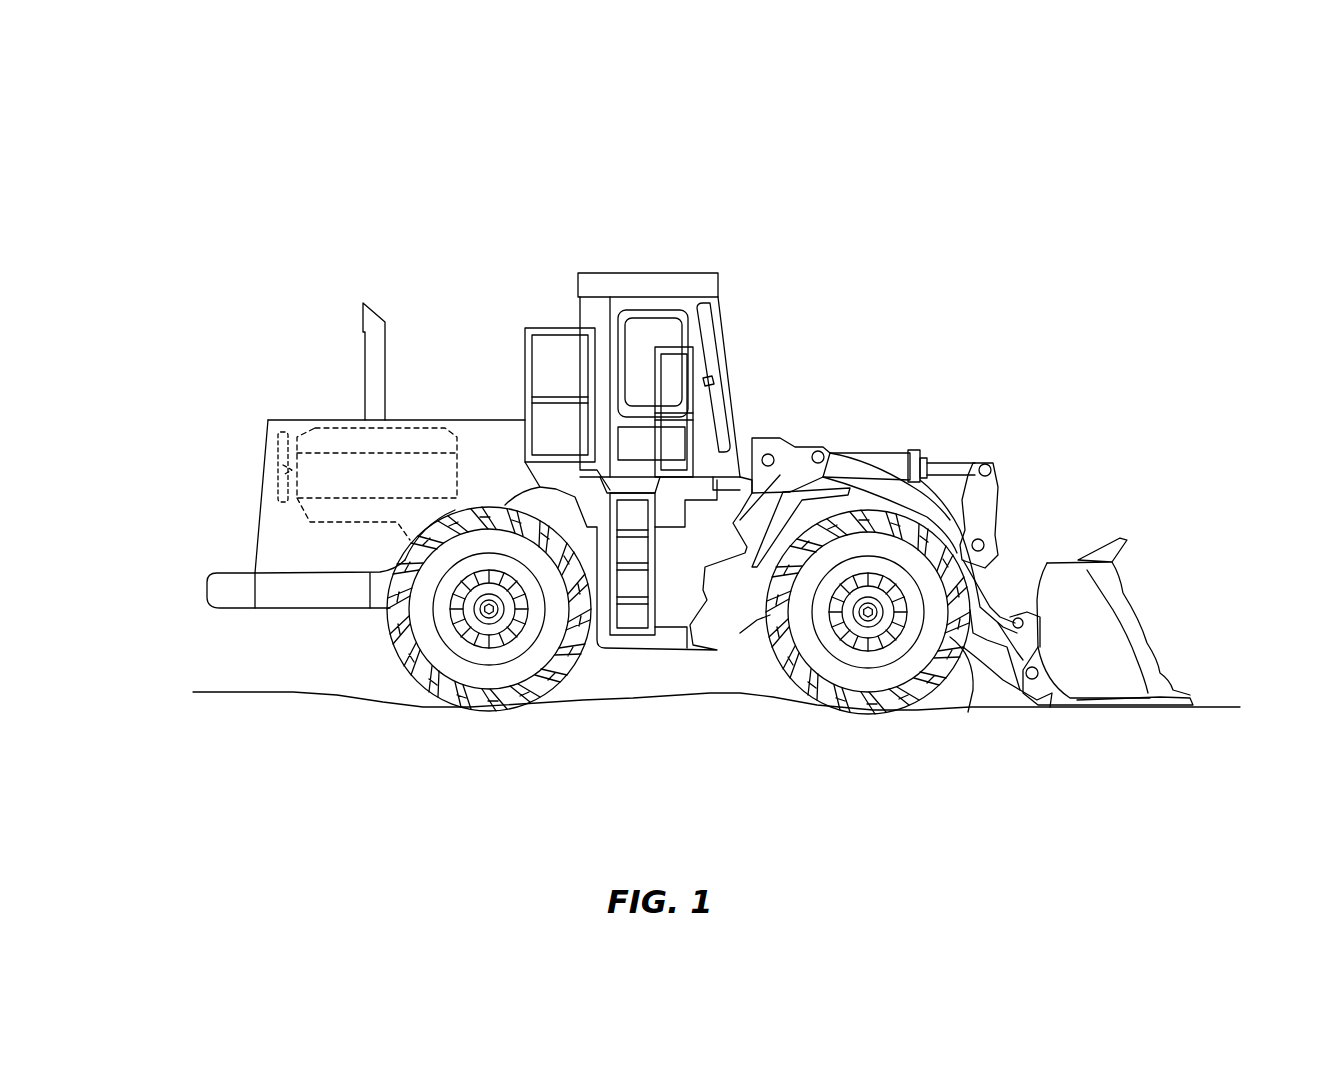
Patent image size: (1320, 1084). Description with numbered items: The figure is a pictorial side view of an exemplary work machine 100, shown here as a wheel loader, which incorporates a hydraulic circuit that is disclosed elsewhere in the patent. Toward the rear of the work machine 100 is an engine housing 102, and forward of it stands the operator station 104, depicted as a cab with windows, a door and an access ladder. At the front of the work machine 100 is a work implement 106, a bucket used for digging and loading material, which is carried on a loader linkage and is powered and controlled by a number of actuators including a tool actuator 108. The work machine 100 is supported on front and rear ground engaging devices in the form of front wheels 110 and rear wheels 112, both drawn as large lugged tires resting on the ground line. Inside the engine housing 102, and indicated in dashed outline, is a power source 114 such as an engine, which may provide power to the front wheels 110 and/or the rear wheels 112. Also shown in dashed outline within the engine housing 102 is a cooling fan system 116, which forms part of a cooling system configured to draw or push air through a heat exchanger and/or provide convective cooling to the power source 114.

The work machine 100 is at (733, 193).
The engine housing 102 is at (285, 420).
The operator station 104 is at (720, 337).
The work implement 106 is at (1122, 560).
The tool actuator 108 is at (915, 455).
The front wheels 110 is at (960, 700).
The rear wheels 112 is at (567, 682).
The power source 114 is at (408, 427).
The cooling fan system 116 is at (277, 453).